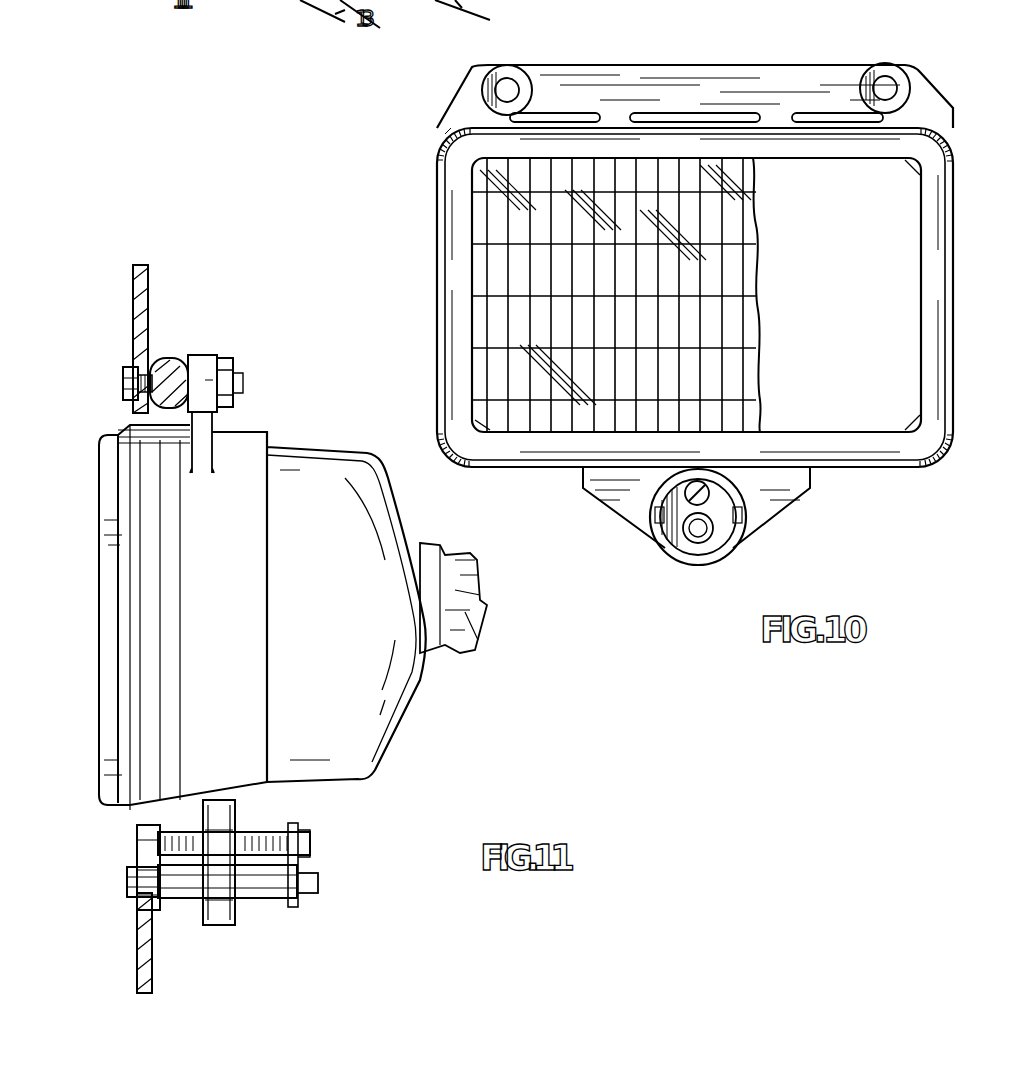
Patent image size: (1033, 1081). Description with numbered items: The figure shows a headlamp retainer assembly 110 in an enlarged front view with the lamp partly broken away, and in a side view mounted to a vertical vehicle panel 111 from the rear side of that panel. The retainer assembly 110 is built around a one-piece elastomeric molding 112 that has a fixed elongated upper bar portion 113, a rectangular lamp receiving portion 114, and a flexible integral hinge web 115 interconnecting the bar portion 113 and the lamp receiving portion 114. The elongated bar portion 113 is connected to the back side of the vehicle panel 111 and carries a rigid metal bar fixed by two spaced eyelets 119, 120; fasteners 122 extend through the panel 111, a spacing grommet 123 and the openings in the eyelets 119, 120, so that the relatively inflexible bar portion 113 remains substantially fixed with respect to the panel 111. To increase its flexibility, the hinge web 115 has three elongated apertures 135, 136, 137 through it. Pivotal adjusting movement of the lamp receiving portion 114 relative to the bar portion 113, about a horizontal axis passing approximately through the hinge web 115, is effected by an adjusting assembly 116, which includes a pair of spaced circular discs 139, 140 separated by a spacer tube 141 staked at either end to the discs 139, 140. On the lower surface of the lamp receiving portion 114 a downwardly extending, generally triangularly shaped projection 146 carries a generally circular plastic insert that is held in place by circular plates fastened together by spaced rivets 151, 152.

In FIG. 10, the headlamp retainer assembly 110 is at (408, 203).
In FIG. 11, the headlamp retainer assembly 110 is at (260, 410).
In FIG. 11, the vehicle panel 111 is at (136, 266).
In FIG. 10, the one-piece elastomeric molding 112 is at (437, 258).
In FIG. 10, the elongated upper bar portion 113 is at (660, 75).
In FIG. 11, the elongated upper bar portion 113 is at (201, 370).
In FIG. 10, the lamp receiving portion 114 is at (520, 470).
In FIG. 11, the lamp receiving portion 114 is at (150, 655).
In FIG. 10, the hinge web 115 is at (482, 117).
In FIG. 11, the hinge web 115 is at (195, 420).
In FIG. 10, the adjusting assembly 116 is at (674, 580).
In FIG. 11, the adjusting assembly 116 is at (338, 840).
In FIG. 10, the eyelet 119 is at (518, 78).
In FIG. 10, the eyelet 120 is at (886, 72).
In FIG. 11, the eyelet 120 is at (227, 366).
In FIG. 11, the fastener 122 is at (126, 376).
In FIG. 11, the spacing grommet 123 is at (166, 358).
In FIG. 10, the elongated aperture 135 is at (585, 113).
In FIG. 10, the elongated aperture 136 is at (742, 108).
In FIG. 10, the elongated aperture 137 is at (815, 113).
In FIG. 11, the circular disc 139 is at (137, 860).
In FIG. 11, the circular disc 140 is at (307, 862).
In FIG. 11, the spacer tube 141 is at (255, 895).
In FIG. 10, the triangularly shaped projection 146 is at (633, 497).
In FIG. 10, the rivet 151 is at (665, 522).
In FIG. 10, the rivet 152 is at (740, 520).